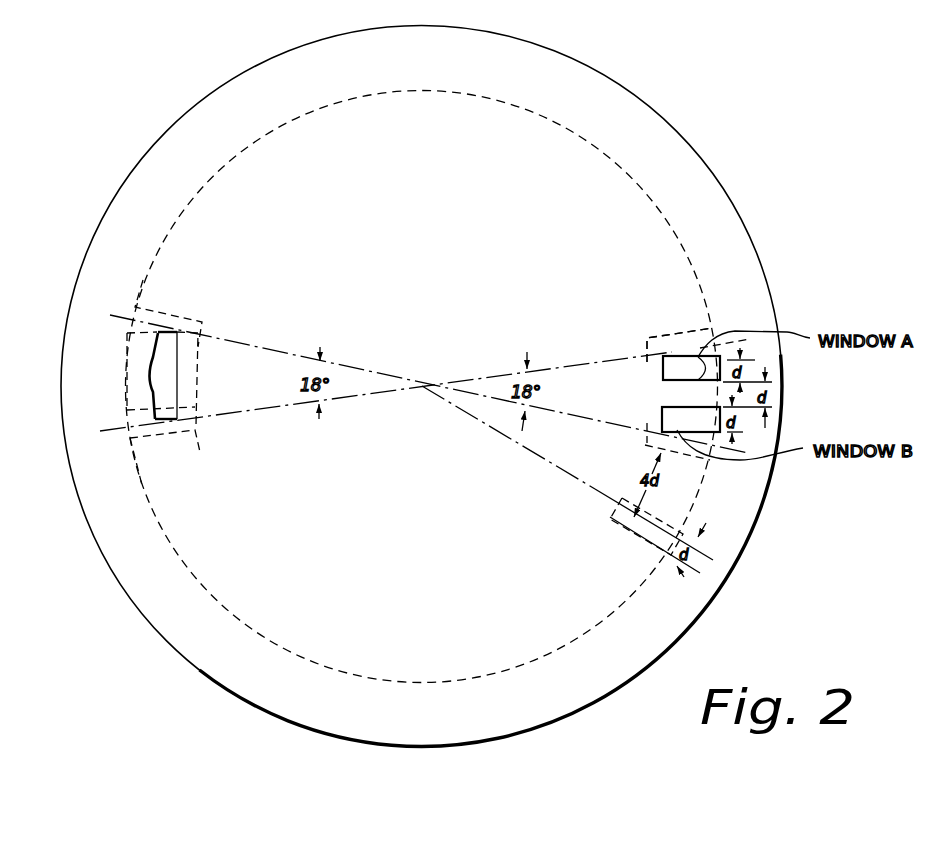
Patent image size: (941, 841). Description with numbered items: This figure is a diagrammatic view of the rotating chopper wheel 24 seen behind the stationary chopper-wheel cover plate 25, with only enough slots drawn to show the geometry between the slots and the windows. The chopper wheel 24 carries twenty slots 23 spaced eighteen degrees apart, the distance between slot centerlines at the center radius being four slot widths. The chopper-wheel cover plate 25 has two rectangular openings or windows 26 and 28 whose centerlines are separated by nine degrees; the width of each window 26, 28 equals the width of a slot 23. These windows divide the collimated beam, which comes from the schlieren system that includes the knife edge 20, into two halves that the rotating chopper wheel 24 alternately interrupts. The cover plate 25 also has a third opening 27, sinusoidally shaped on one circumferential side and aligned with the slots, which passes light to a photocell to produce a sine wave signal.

The knife edge 20 is at (713, 322).
The slot 23 is at (685, 330).
The chopper wheel 24 is at (530, 108).
The chopper-wheel cover plate 25 is at (572, 58).
The window 26 is at (662, 370).
The third opening 27 is at (177, 375).
The window 28 is at (660, 405).